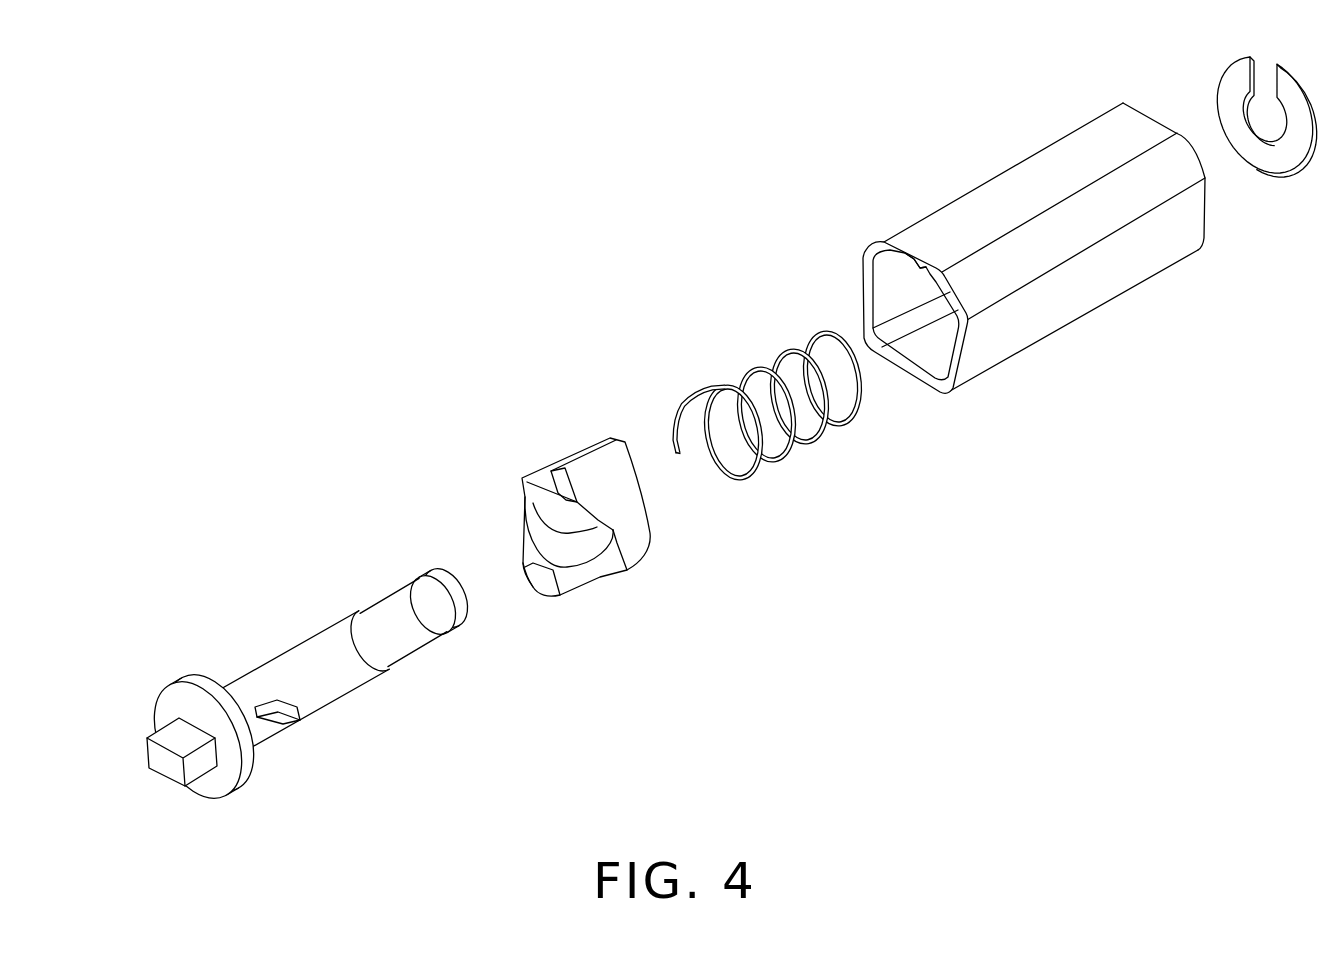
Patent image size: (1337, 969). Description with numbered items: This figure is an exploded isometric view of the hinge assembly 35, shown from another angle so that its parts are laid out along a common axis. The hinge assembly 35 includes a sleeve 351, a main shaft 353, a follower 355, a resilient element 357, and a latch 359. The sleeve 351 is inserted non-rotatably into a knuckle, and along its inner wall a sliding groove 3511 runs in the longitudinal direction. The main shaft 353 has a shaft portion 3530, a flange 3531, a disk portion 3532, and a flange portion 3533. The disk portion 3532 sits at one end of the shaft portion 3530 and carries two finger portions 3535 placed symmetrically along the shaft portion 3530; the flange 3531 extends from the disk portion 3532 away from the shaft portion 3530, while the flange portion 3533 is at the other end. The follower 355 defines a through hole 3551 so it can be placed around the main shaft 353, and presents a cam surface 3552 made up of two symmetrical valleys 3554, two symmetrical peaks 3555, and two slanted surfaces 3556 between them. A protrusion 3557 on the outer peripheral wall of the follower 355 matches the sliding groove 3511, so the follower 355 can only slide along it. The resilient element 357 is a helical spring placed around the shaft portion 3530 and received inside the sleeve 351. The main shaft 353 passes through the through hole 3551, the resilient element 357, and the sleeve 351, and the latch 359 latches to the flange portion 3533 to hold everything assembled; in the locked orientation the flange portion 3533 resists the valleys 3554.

The hinge assembly 35 is at (540, 268).
The sleeve 351 is at (1000, 200).
The sliding groove 3511 is at (922, 266).
The main shaft 353 is at (255, 630).
The shaft portion 3530 is at (347, 677).
The flange 3531 is at (165, 768).
The disk portion 3532 is at (253, 767).
The flange portion 3533 is at (457, 623).
The finger portion 3535 is at (283, 723).
The follower 355 is at (537, 443).
The through hole 3551 is at (558, 543).
The cam surface 3552 is at (716, 604).
The valley 3554 is at (617, 545).
The peak 3555 is at (553, 594).
The slanted surface 3556 is at (588, 577).
The protrusion 3557 is at (602, 446).
The resilient element 357 is at (750, 372).
The latch 359 is at (1233, 79).